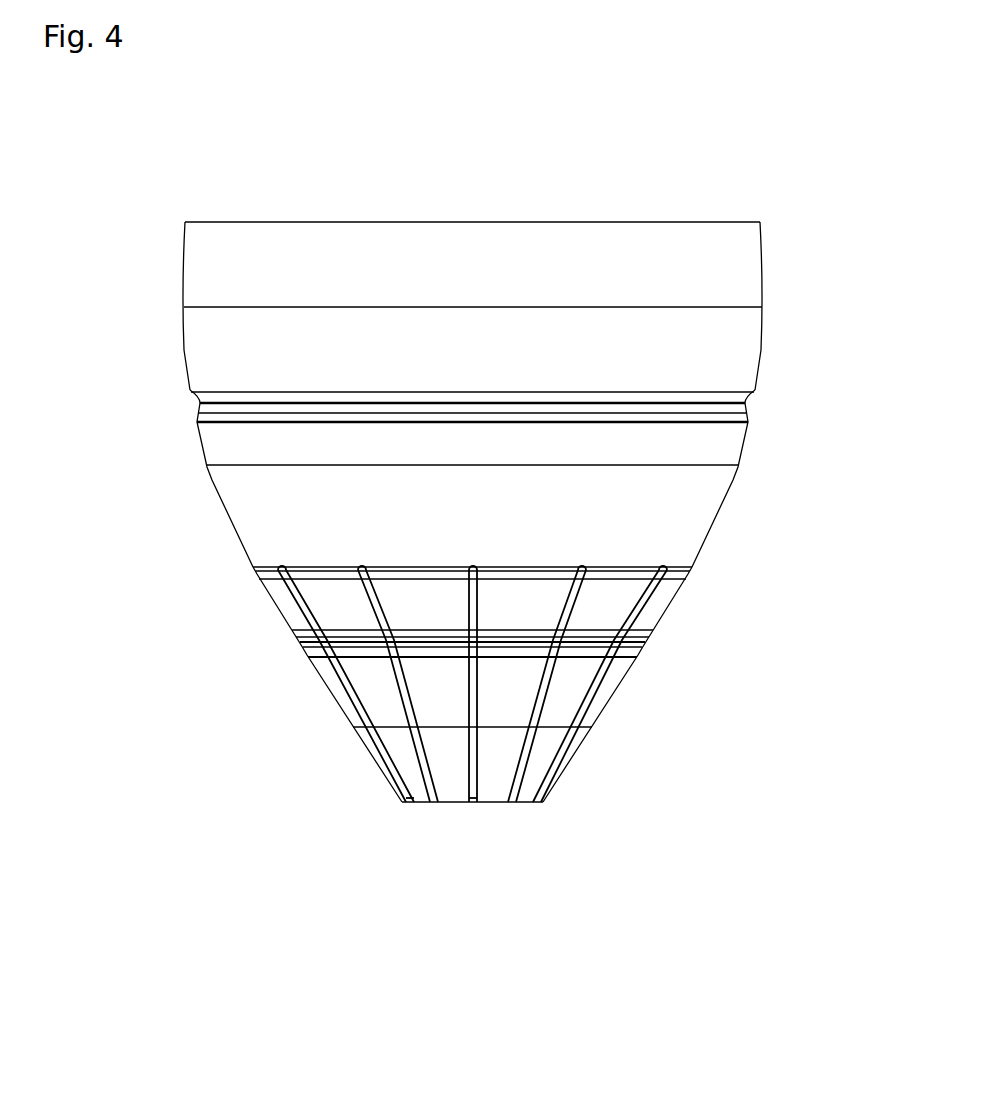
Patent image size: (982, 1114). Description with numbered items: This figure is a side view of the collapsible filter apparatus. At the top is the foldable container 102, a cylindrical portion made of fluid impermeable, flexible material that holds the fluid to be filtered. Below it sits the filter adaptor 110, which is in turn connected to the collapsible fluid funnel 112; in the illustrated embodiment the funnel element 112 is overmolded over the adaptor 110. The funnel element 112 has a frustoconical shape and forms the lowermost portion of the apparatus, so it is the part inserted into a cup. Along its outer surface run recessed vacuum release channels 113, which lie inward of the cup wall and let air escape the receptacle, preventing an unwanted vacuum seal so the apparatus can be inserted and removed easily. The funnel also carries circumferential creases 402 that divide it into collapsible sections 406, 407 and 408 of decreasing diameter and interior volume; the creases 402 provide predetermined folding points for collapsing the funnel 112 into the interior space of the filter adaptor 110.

The foldable container 102 is at (778, 317).
The filter adaptor 110 is at (213, 502).
The collapsible fluid funnel 112 is at (585, 797).
The recessed channel 113 is at (475, 802).
The circumferential crease 402 is at (597, 730).
The collapsible section 406 is at (253, 613).
The collapsible section 407 is at (325, 703).
The collapsible section 408 is at (370, 782).